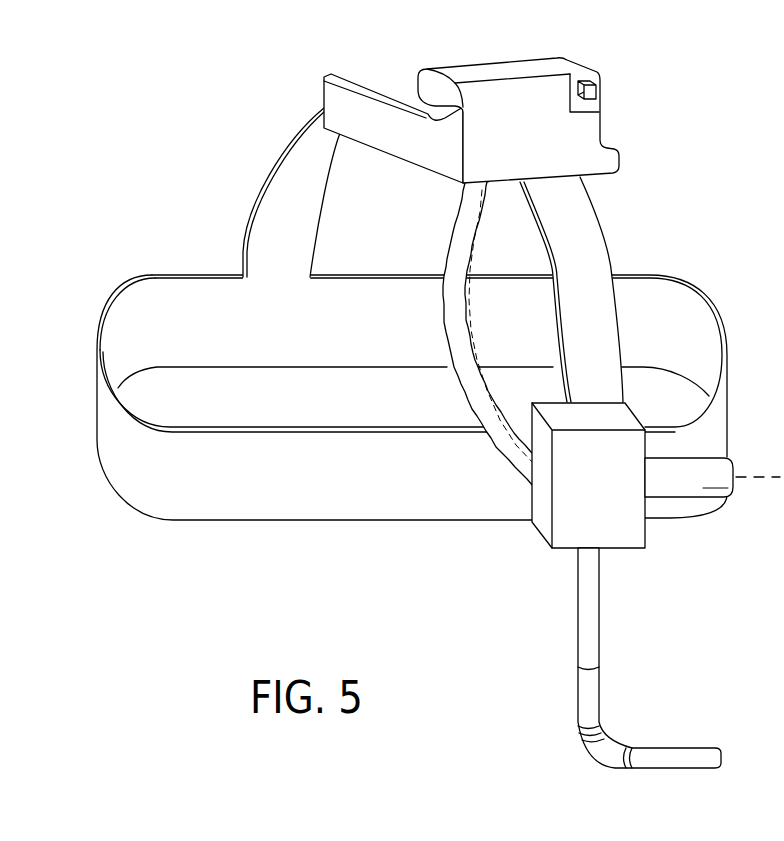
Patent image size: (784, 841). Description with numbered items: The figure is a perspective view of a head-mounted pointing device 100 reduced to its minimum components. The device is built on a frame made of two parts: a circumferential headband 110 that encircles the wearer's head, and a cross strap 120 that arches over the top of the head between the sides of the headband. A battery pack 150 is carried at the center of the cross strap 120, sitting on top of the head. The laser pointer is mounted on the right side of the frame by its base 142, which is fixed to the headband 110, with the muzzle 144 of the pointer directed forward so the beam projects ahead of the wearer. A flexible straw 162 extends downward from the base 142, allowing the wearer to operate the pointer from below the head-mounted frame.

The head-mounted pointing device 100 is at (242, 81).
The circumferential headband 110 is at (277, 510).
The cross strap 120 is at (283, 190).
The base 142 is at (615, 503).
The muzzle 144 is at (690, 487).
The battery pack 150 is at (387, 120).
The flexible straw 162 is at (587, 698).